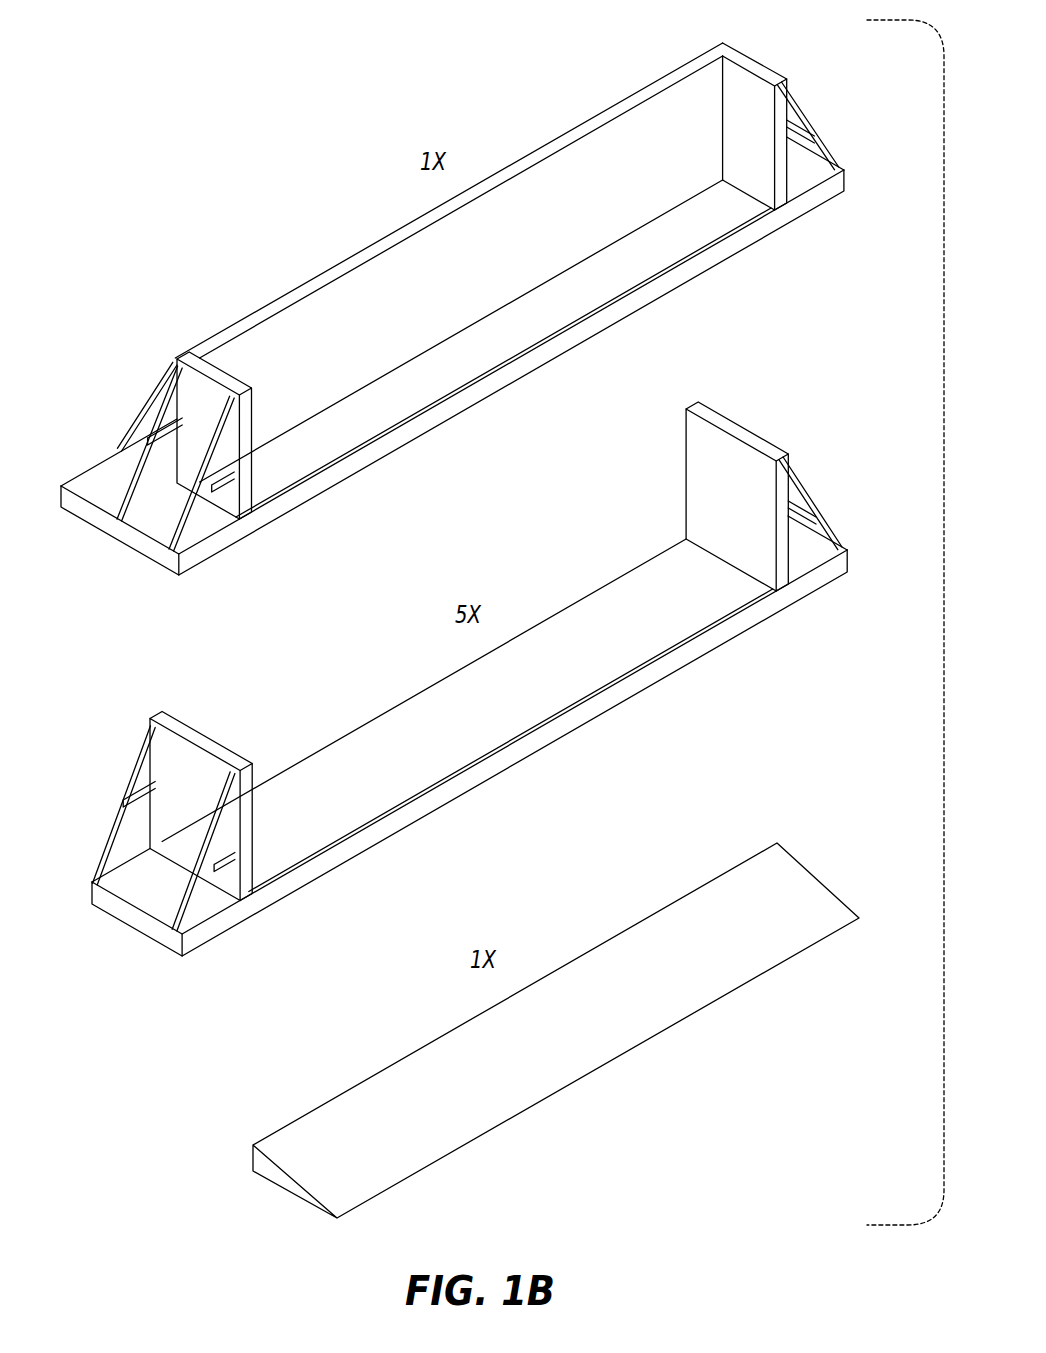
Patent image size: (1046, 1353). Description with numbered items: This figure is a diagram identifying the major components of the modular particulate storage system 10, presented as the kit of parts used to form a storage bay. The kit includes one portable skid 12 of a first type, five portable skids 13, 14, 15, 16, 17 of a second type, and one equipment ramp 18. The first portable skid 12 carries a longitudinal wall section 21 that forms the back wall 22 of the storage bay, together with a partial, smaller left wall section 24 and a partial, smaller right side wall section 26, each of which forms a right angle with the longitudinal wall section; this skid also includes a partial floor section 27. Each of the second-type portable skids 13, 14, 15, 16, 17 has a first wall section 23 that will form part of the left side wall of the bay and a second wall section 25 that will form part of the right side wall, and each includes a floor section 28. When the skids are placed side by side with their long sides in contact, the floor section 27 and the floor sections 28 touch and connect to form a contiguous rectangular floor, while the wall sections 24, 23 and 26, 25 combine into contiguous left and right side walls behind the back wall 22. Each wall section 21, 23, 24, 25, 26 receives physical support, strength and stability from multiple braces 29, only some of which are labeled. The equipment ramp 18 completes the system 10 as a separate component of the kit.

The modular particulate storage system 10 is at (225, 118).
The first portable skid 12 is at (158, 357).
The portable skid 13 is at (503, 631).
The portable skid 14 is at (503, 631).
The portable skid 15 is at (503, 631).
The portable skid 16 is at (503, 631).
The portable skid 17 is at (789, 421).
The equipment ramp 18 is at (637, 910).
The longitudinal wall section 21 is at (570, 122).
The back wall 22 is at (471, 282).
The first wall section 23 is at (200, 722).
The partial left wall section 24 is at (225, 355).
The second wall section 25 is at (731, 418).
The partial right side wall section 26 is at (757, 68).
The floor section 27 is at (524, 342).
The floor section 28 is at (511, 705).
The brace 29 is at (840, 151).